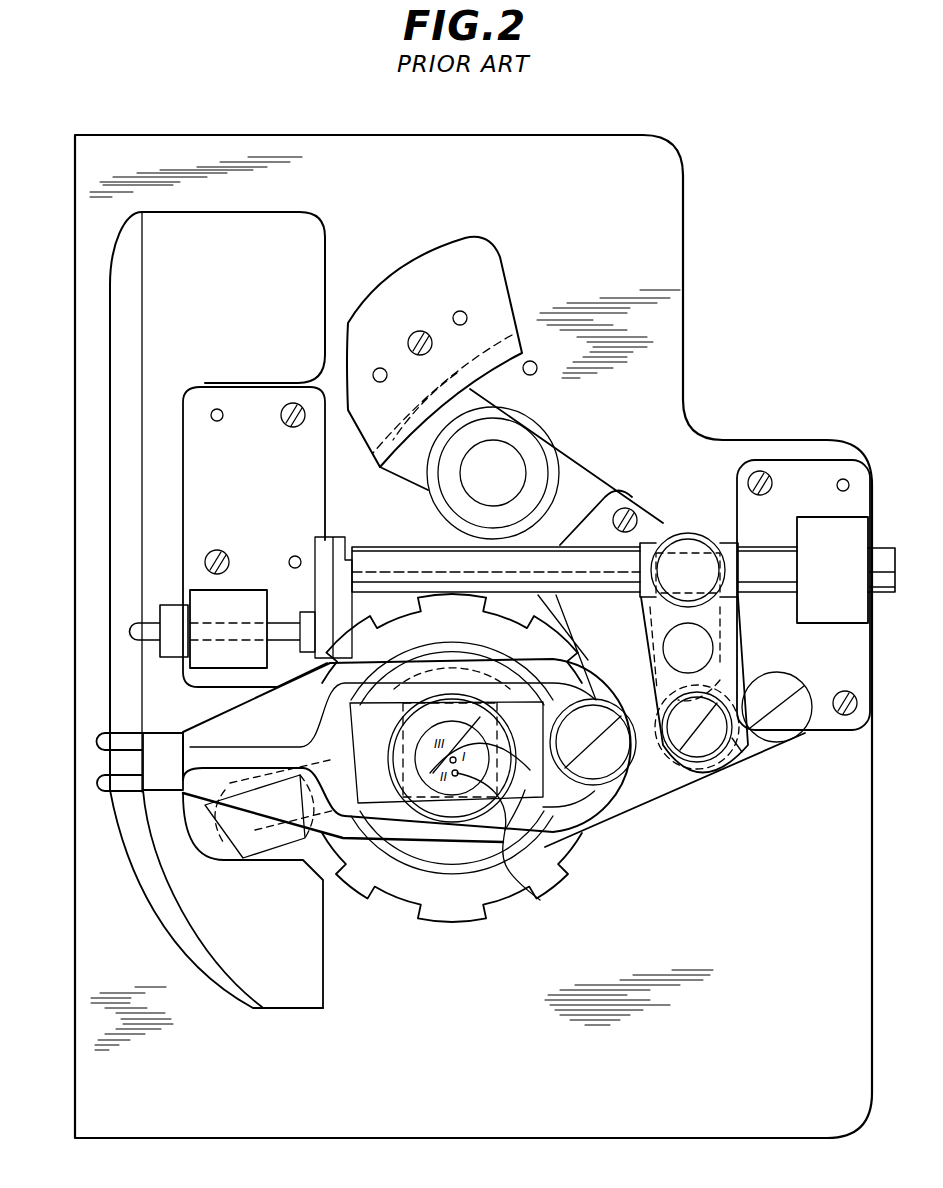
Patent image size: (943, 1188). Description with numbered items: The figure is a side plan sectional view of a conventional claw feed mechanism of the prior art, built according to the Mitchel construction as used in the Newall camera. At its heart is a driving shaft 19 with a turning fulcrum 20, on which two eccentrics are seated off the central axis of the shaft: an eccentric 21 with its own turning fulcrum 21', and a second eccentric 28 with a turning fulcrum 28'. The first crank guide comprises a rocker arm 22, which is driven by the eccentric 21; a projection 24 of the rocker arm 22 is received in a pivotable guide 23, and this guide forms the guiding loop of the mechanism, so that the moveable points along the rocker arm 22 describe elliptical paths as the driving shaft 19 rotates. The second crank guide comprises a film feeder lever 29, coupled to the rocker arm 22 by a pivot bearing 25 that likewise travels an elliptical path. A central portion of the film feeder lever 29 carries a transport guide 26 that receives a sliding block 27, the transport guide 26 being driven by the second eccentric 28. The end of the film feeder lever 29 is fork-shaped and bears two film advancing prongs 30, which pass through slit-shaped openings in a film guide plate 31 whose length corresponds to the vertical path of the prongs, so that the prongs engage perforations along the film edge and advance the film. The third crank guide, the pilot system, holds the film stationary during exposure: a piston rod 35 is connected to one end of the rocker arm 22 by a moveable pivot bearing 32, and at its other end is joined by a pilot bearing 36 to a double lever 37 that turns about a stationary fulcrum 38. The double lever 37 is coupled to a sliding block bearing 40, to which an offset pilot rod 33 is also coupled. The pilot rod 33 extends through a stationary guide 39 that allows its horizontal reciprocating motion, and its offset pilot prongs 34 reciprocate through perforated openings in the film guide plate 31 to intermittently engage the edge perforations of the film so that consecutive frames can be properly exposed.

The driving shaft 19 is at (450, 652).
The turning fulcrum 20 is at (450, 818).
The eccentric 21 is at (452, 778).
The turning fulcrum 21' is at (498, 828).
The rocker arm 22 is at (650, 785).
The pivotable guide 23 is at (264, 850).
The projection 24 is at (213, 827).
The pivot bearing 25 is at (601, 768).
The transport guide 26 is at (540, 900).
The sliding block 27 is at (383, 748).
The second eccentric 28 is at (476, 700).
The turning fulcrum 28' is at (486, 764).
The film feeder lever 29 is at (175, 795).
The film advancing prongs 30 is at (120, 740).
The film guide plate 31 is at (175, 962).
The moveable pivot bearing 32 is at (798, 720).
The pilot rod 33 is at (288, 614).
The pilot prongs 34 is at (132, 627).
The piston rod 35 is at (742, 752).
The pilot bearing 36 is at (706, 748).
The double lever 37 is at (695, 700).
The stationary fulcrum 38 is at (690, 652).
The stationary guide 39 is at (205, 602).
The sliding block bearing 40 is at (683, 572).